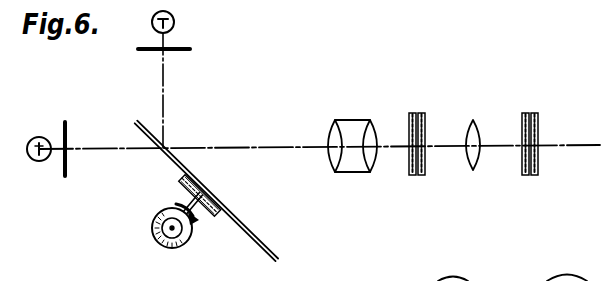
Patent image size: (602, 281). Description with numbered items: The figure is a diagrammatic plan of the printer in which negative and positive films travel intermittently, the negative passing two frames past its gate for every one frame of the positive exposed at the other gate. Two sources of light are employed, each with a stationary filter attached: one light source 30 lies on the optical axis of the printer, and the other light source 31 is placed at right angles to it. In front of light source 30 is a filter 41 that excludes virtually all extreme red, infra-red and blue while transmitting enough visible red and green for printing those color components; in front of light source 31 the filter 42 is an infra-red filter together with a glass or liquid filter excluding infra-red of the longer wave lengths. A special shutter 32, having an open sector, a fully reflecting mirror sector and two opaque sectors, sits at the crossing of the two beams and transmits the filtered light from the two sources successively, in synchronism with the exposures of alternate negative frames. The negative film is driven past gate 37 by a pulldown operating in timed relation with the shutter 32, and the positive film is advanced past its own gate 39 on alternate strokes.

The light source 30 is at (40, 137).
The filter 41 is at (66, 128).
The light source 31 is at (174, 22).
The filter 42 is at (190, 49).
The shutter 32 is at (258, 243).
The gate 37 is at (425, 118).
The plates P 39 is at (537, 140).